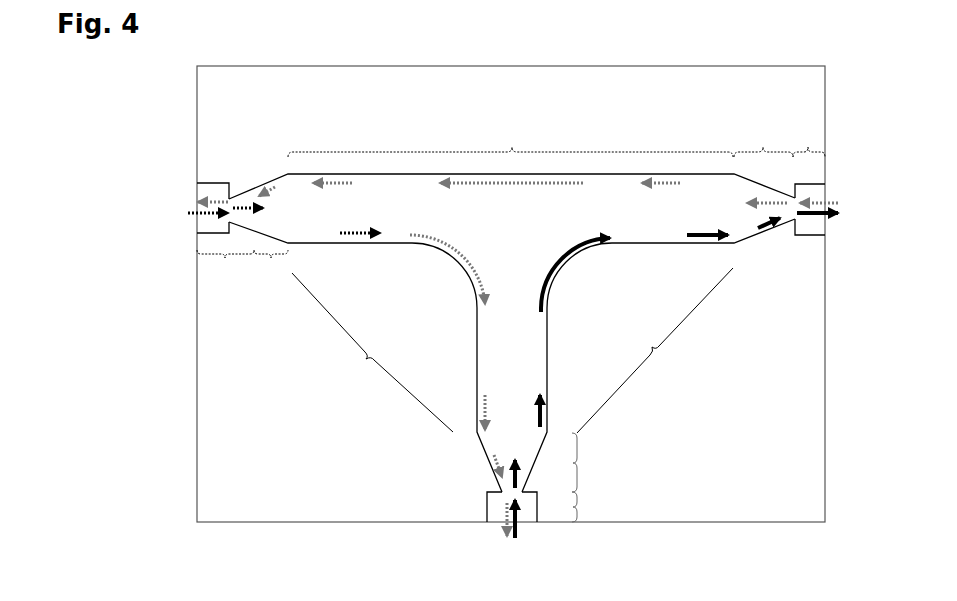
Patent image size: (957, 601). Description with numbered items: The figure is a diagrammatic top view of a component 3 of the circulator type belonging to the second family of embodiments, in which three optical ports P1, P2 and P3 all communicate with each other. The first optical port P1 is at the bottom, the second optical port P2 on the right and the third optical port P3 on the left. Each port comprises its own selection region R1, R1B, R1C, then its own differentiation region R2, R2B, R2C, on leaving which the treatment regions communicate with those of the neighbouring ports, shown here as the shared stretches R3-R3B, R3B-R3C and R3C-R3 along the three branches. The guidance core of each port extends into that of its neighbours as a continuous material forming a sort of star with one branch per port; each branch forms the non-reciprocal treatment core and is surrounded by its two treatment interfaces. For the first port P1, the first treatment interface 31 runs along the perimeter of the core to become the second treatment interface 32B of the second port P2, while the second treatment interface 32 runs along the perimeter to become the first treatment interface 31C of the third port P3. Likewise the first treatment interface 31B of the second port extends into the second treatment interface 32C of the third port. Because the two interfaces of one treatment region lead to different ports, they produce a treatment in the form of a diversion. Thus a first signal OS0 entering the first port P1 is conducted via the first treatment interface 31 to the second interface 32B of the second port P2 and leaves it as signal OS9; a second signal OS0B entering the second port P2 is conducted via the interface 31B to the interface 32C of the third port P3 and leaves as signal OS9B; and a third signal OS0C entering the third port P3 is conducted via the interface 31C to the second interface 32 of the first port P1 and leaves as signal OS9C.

The component 3 is at (427, 50).
The third optical port P3 is at (186, 187).
The second signal leaving the third port OS9B is at (190, 202).
The third signal OS0C is at (190, 214).
The selection region of the third port R1C is at (225, 265).
The differentiation region of the third port R2C is at (271, 265).
The second treatment interface of the third port 32C is at (340, 172).
The first treatment interface of the third port 31C is at (377, 244).
The treatment regions of the second and third ports R3B-R3C is at (510, 141).
The first treatment interface of the second port 31B is at (677, 173).
The second treatment interface of the second port 32B is at (683, 244).
The differentiation region of the second port R2B is at (763, 144).
The selection region of the second port R1B is at (809, 143).
The second signal OS0B is at (831, 197).
The first signal leaving the second port OS9 is at (836, 215).
The second optical port P2 is at (845, 238).
The second treatment interface 32 is at (477, 365).
The first treatment interface 31 is at (547, 355).
The treatment regions of the third and first ports R3C-R3 is at (372, 352).
The treatment regions of the first and second ports R3-R3B is at (655, 350).
The differentiation region R2 is at (588, 462).
The selection region R1 is at (588, 507).
The third signal leaving the first port OS9C is at (504, 541).
The first signal OS0 is at (518, 541).
The first optical port P1 is at (538, 534).